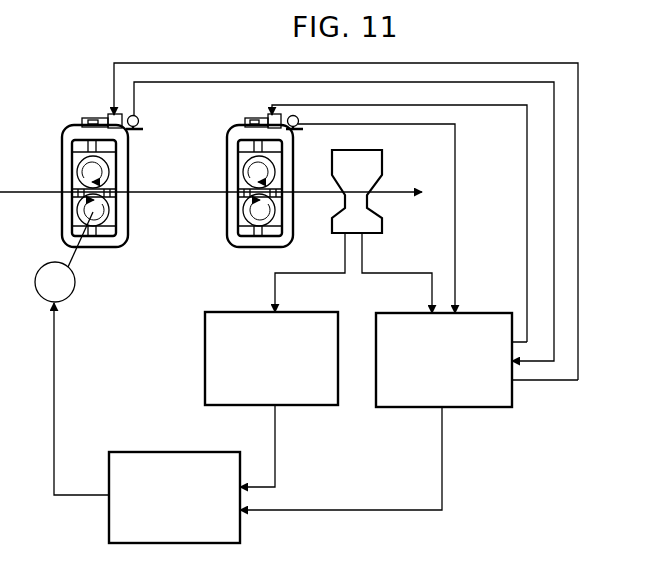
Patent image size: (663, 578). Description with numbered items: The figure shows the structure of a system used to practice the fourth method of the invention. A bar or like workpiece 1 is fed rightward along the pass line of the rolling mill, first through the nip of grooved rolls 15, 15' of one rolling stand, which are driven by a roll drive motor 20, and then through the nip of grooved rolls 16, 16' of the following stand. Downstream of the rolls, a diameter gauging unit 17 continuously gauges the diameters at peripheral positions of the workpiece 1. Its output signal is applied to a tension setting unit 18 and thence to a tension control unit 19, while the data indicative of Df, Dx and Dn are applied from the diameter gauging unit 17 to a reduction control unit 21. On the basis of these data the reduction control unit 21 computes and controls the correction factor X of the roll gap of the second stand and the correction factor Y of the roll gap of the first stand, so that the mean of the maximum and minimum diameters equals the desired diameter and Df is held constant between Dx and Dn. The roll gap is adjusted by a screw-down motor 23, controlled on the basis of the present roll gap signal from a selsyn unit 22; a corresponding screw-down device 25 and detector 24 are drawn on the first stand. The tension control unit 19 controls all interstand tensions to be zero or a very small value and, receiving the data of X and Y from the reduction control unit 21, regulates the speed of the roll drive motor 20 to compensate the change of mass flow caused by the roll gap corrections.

The workpiece 1 is at (190, 193).
The grooved roll 15 is at (120, 169).
The grooved roll 15' is at (123, 220).
The grooved roll 16 is at (231, 172).
The grooved roll 16' is at (225, 232).
The diameter gauging unit 17 is at (382, 160).
The tension setting unit 18 is at (205, 355).
The tension control unit 19 is at (145, 458).
The roll drive motor 20 is at (75, 282).
The reduction control unit 21 is at (393, 407).
The selsyn unit 22 is at (302, 128).
The screw-down motor 23 is at (272, 118).
The screw-down position detector of first stand 24 is at (139, 122).
The screw-down device of first stand 25 is at (112, 113).